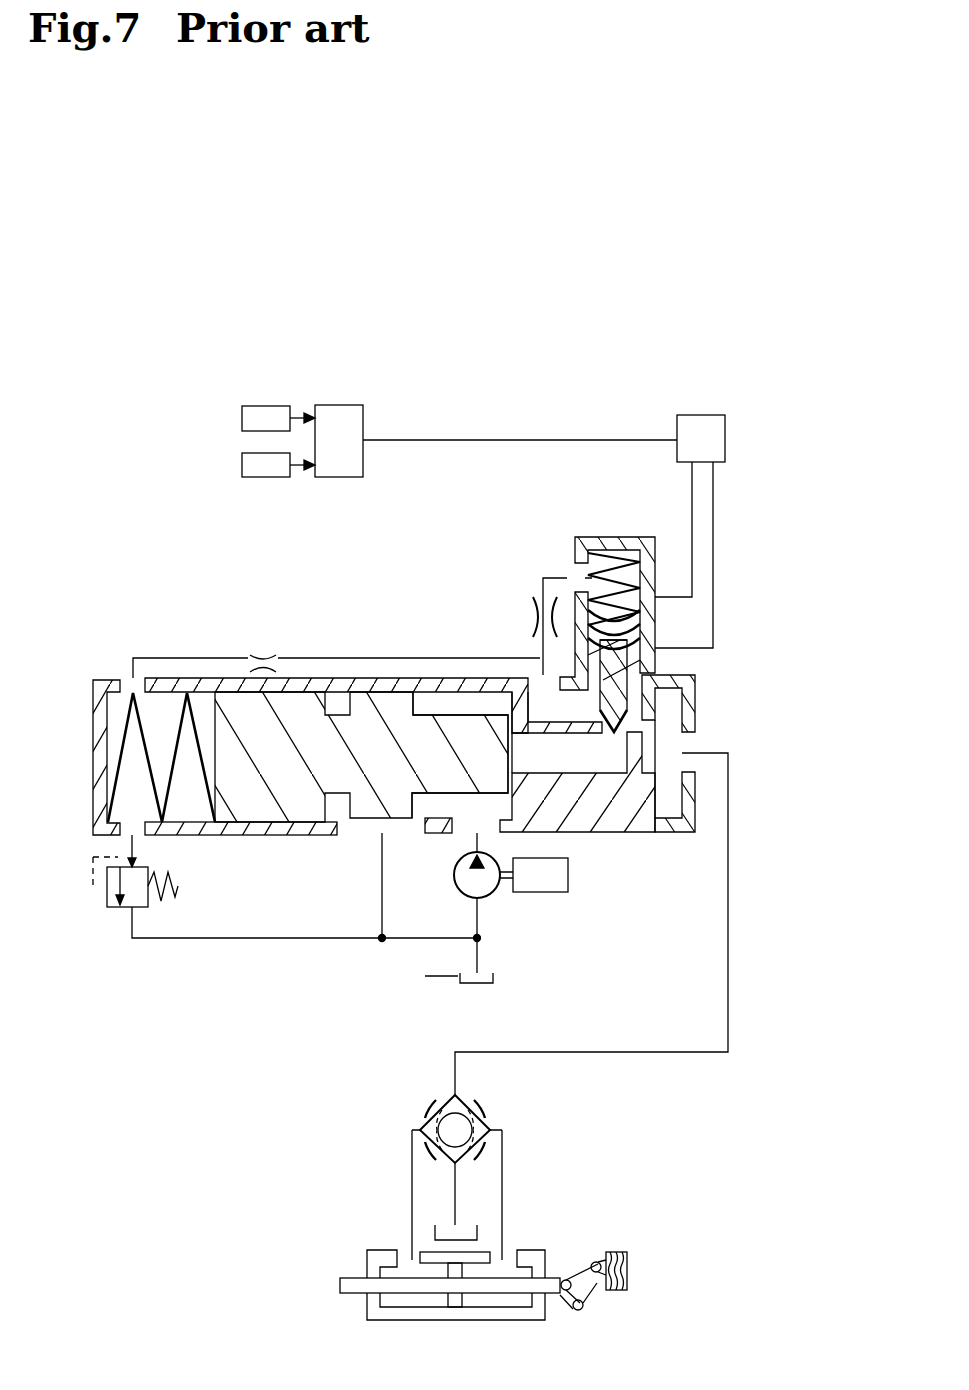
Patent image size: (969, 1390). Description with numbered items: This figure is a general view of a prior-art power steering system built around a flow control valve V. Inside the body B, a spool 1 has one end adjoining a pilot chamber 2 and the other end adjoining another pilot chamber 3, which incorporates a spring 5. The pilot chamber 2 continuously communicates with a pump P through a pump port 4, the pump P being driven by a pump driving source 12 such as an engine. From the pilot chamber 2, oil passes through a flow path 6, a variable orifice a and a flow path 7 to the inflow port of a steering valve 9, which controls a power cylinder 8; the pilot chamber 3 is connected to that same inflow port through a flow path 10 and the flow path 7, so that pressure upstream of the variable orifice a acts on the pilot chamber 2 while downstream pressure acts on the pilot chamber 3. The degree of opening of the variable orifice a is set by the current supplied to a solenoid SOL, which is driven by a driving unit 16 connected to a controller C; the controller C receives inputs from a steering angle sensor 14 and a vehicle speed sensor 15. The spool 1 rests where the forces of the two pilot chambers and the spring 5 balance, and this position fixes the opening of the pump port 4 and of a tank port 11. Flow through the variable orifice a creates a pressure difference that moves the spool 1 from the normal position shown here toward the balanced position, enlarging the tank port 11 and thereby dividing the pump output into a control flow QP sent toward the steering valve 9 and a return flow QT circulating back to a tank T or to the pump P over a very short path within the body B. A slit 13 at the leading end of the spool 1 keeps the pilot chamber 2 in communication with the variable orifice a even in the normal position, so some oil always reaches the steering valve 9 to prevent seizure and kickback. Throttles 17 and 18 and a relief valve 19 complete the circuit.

The spool 1 is at (311, 700).
The pilot chamber 2 is at (455, 700).
The pilot chamber 3 is at (157, 700).
The pump port 4 is at (458, 838).
The spring 5 is at (133, 690).
The flow path 6 is at (587, 758).
The flow path 7 is at (673, 812).
The power cylinder 8 is at (522, 1250).
The steering valve 9 is at (427, 1120).
The flow path 10 is at (378, 662).
The tank port 11 is at (358, 835).
The pump driving source 12 is at (553, 894).
The slit 13 is at (506, 705).
The steering angle sensor 14 is at (244, 420).
The vehicle speed sensor 15 is at (244, 466).
The driving unit 16 is at (699, 432).
The throttle 17 is at (263, 650).
The throttle 18 is at (533, 612).
The relief valve 19 is at (112, 908).
The variable orifice a is at (627, 723).
The body B is at (205, 633).
The controller C is at (344, 418).
The flow control valve V is at (77, 727).
The pump P is at (490, 899).
The tank T is at (447, 1225).
The return flow QT is at (362, 887).
The control flow QP is at (596, 907).
The solenoid SOL is at (616, 612).